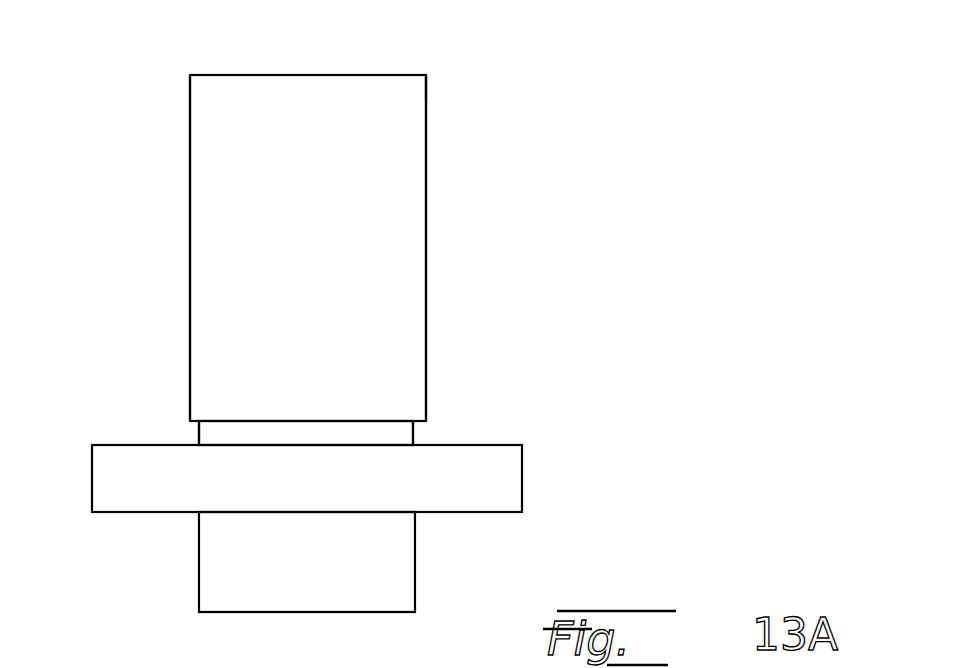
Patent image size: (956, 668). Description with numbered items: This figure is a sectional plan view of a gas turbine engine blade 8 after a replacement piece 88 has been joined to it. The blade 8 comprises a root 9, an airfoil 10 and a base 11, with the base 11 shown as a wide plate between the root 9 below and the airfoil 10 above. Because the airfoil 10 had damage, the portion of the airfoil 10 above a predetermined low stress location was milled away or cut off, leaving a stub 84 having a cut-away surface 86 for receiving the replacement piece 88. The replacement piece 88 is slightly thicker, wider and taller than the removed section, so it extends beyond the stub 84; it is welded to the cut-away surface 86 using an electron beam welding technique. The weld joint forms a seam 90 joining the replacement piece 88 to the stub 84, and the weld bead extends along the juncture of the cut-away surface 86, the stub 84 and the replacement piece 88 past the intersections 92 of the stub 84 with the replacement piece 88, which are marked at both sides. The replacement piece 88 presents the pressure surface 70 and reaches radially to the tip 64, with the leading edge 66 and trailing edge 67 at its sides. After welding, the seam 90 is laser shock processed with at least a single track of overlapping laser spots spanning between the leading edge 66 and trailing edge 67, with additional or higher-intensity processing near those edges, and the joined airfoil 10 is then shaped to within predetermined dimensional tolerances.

The blade 8 is at (518, 530).
The root 9 is at (415, 565).
The airfoil 10 is at (154, 352).
The base 11 is at (522, 470).
The tip 64 is at (260, 75).
The leading edge 66 is at (426, 274).
The trailing edge 67 is at (190, 203).
The pressure surface 70 is at (320, 258).
The stub 84 is at (413, 443).
The cut-away surface 86 is at (249, 424).
The replacement piece 88 is at (426, 75).
The seam 90 is at (378, 421).
The intersections 92 is at (192, 425).